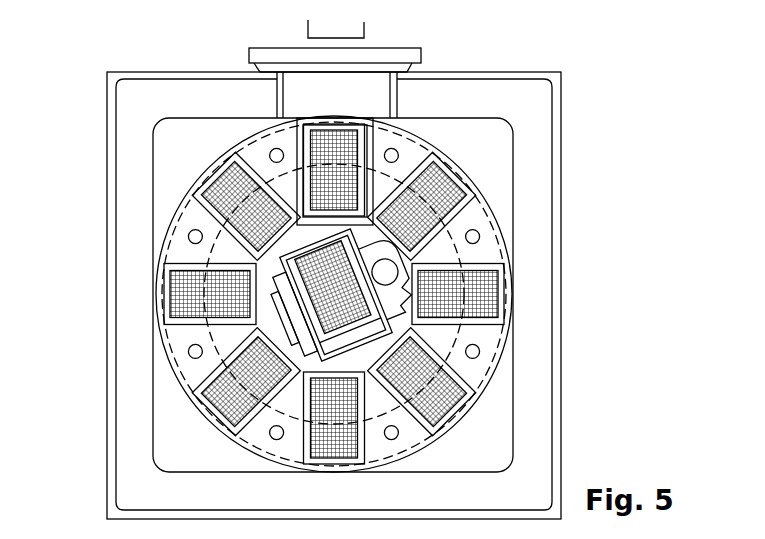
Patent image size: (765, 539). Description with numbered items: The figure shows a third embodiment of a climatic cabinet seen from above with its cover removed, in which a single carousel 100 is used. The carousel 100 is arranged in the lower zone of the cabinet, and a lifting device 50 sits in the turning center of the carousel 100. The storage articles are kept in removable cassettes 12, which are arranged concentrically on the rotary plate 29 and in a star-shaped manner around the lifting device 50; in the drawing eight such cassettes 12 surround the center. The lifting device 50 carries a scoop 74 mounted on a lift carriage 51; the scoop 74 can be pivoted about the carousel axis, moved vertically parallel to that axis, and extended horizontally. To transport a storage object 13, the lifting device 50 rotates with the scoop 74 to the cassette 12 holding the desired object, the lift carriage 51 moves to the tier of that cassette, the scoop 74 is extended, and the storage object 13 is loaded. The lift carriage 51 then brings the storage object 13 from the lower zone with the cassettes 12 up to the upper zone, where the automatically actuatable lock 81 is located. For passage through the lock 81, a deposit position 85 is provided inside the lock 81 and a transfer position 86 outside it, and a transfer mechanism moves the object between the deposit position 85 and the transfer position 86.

The removable cassette 12 is at (468, 185).
The storage object 13 is at (197, 190).
The rotary plate 29 is at (478, 357).
The lifting device 50 is at (395, 305).
The lift carriage 51 is at (275, 299).
The scoop 74 is at (349, 228).
The automatically actuatable lock 81 is at (362, 93).
The deposit position 85 is at (315, 147).
The transfer position 86 is at (308, 29).
The carousel 100 is at (497, 217).